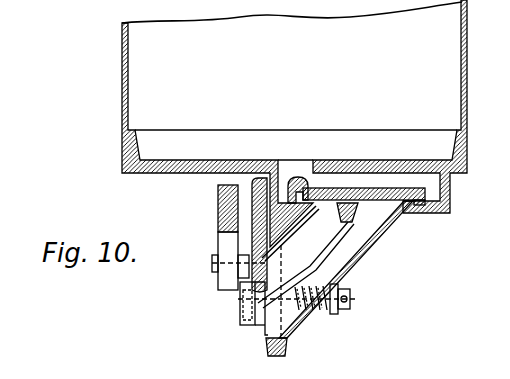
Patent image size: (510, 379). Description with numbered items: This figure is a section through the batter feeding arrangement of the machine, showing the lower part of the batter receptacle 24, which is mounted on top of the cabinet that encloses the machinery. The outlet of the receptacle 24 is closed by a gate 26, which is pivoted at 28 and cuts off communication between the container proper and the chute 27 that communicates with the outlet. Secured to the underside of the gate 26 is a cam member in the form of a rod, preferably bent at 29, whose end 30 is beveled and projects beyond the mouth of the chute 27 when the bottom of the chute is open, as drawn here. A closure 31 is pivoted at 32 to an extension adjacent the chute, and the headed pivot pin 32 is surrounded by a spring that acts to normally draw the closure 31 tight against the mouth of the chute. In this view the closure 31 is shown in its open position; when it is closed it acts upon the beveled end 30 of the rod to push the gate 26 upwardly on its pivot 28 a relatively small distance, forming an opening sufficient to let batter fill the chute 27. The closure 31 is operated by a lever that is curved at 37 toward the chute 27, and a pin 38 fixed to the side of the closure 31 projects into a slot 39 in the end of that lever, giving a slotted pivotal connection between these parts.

The batter receptacle 24 is at (294, 123).
The gate 26 is at (327, 188).
The chute 27 is at (374, 242).
The pivot 28 is at (298, 178).
The bent portion of rod 29 is at (320, 268).
The beveled end 30 is at (257, 303).
The closure 31 is at (262, 262).
The headed pivot pin 32 is at (350, 301).
The curved portion of lever 37 is at (218, 214).
The pin 38 is at (244, 257).
The slot 39 is at (218, 250).